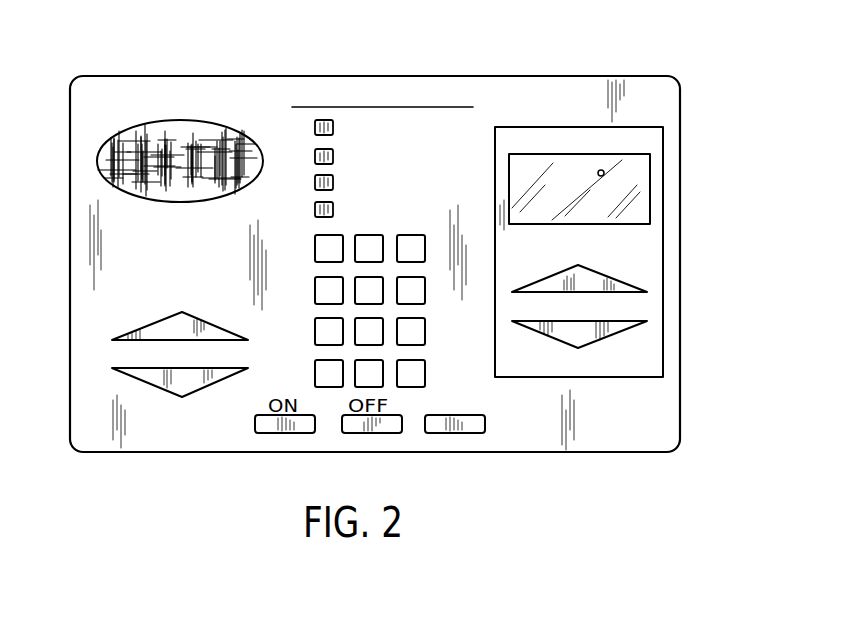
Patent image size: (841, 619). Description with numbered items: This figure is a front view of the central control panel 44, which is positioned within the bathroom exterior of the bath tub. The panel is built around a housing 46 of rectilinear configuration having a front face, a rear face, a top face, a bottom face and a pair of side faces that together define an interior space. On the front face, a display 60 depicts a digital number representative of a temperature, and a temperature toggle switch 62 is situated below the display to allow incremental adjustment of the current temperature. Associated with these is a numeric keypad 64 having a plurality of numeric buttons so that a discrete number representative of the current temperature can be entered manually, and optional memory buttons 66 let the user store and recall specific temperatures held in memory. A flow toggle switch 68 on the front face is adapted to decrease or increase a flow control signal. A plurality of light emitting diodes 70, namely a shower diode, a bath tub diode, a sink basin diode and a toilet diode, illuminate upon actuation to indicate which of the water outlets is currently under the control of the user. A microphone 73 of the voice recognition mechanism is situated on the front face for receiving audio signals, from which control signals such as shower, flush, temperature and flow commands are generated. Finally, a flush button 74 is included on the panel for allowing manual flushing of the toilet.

The central control panel 44 is at (677, 78).
The housing 46 is at (540, 91).
The display 60 is at (645, 158).
The temperature toggle switch 62 is at (628, 284).
The numeric keypad 64 is at (420, 232).
The memory buttons 66 is at (426, 373).
The flow toggle switch 68 is at (142, 332).
The light emitting diodes 70 is at (315, 126).
The microphone 73 is at (210, 120).
The flush button 74 is at (437, 428).